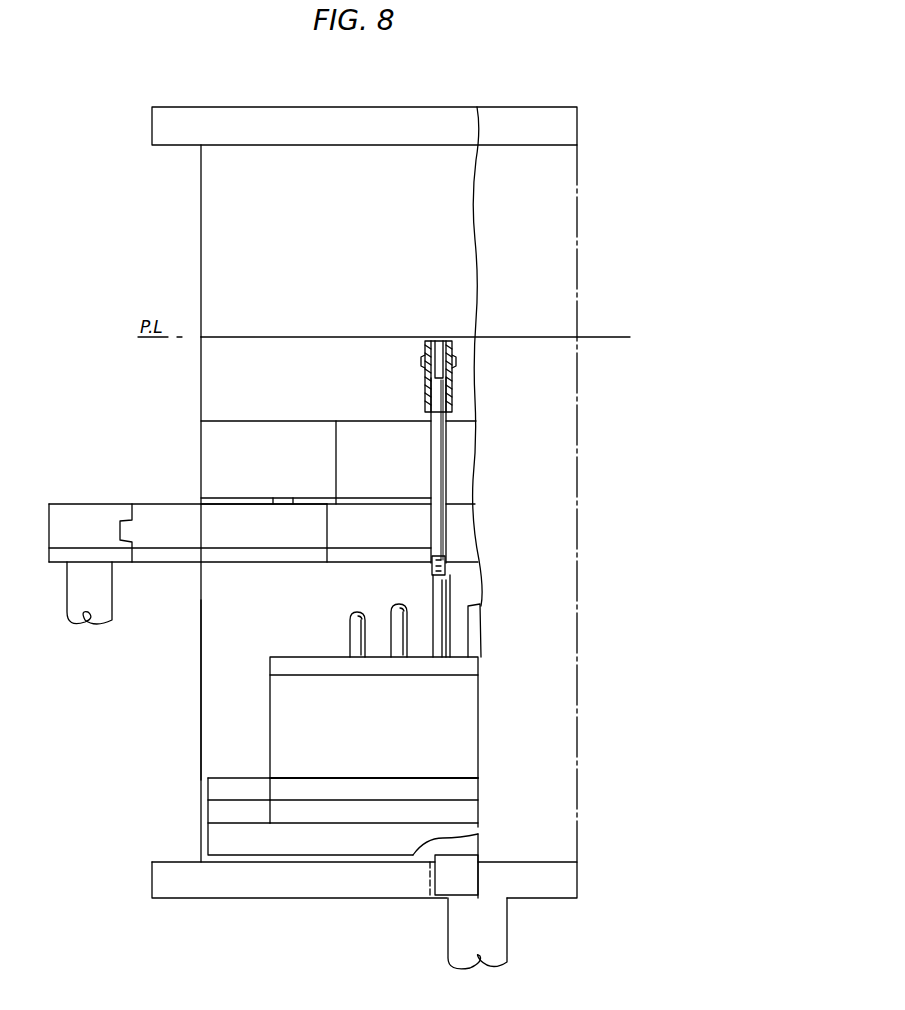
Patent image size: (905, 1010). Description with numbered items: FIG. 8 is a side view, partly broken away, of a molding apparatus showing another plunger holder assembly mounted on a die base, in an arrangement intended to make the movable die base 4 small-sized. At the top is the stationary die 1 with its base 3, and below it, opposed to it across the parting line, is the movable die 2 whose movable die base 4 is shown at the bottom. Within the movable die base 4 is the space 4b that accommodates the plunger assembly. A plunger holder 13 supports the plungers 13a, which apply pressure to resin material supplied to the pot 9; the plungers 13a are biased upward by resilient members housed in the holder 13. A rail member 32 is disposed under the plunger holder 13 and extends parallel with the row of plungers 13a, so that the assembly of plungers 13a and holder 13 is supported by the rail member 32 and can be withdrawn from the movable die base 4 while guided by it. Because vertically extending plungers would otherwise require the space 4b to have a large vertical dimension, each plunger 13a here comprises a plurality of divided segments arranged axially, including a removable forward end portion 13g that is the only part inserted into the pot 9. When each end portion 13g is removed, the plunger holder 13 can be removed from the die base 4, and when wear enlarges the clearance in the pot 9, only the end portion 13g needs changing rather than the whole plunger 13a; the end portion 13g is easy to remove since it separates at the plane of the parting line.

The stationary die 1 is at (150, 121).
The movable die 2 is at (151, 882).
The base 3 is at (206, 217).
The movable die base 4 is at (212, 379).
The space 4b is at (223, 679).
The pot 9 is at (442, 348).
The plunger holder 13 is at (299, 653).
The plunger 13a is at (438, 588).
The forward end portion 13g is at (438, 463).
The rail member 32 is at (212, 777).